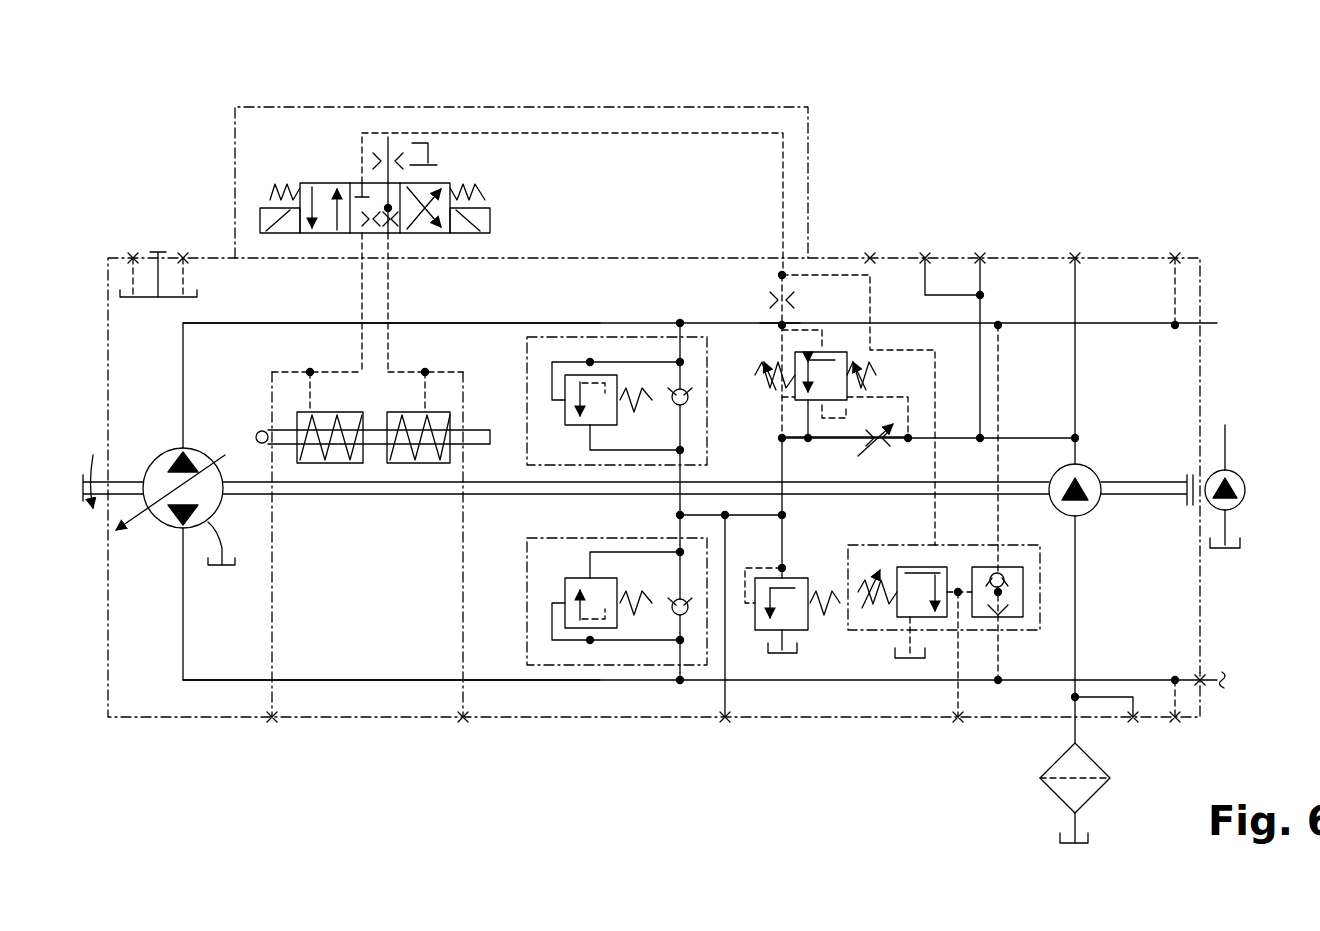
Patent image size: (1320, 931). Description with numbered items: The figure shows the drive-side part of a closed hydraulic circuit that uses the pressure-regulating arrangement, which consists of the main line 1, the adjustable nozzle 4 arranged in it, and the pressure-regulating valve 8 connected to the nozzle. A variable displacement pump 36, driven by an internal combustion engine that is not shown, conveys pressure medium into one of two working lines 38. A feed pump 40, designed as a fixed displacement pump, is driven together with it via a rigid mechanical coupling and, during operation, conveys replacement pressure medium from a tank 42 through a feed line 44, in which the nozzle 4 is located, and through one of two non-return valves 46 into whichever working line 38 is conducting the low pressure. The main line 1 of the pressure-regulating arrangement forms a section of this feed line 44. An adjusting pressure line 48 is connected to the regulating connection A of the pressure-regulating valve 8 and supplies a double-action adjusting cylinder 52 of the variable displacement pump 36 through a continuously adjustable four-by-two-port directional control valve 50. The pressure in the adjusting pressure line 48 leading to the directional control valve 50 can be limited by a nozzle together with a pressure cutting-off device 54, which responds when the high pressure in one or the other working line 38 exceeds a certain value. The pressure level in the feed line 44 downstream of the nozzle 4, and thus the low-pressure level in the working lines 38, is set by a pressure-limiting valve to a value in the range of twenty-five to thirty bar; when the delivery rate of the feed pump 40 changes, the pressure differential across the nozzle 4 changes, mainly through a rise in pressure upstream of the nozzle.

The main line 1 is at (897, 447).
The adjustable nozzle 4 is at (895, 420).
The pressure-regulating valve 8 is at (827, 348).
The variable displacement pump 36 is at (158, 470).
The working lines 38 is at (510, 322).
The feed pump 40 is at (1085, 500).
The tank 42 is at (1087, 686).
The feed line 44 is at (1018, 440).
The non-return valves 46 is at (683, 390).
The adjusting pressure line 48 is at (612, 130).
The directional control valve 50 is at (343, 172).
The adjusting cylinder 52 is at (348, 402).
The pressure cutting-off device 54 is at (940, 633).
The regulating connection A is at (773, 323).